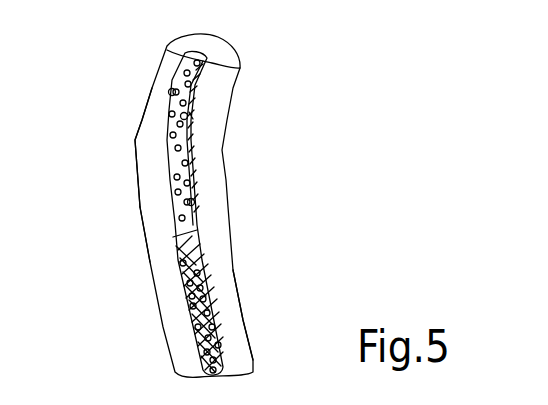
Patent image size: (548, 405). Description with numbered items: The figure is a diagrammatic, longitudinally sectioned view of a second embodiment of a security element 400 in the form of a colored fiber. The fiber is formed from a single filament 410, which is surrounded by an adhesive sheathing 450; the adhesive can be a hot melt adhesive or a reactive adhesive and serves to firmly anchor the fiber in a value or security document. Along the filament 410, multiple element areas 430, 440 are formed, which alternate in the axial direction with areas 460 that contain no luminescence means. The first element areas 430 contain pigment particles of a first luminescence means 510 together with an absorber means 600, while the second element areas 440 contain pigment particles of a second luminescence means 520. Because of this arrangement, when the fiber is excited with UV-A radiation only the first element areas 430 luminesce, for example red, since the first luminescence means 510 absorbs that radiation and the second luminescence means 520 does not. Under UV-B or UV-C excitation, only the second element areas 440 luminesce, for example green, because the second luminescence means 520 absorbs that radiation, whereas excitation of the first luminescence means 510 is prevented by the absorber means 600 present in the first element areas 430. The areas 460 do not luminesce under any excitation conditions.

The security element 400 is at (236, 181).
The filament 410 is at (170, 91).
The first element areas 430 is at (199, 104).
The second element areas 440 is at (165, 172).
The adhesive sheathing 450 is at (231, 54).
The areas containing no luminescence means 460 is at (170, 230).
The first luminescence means 510 is at (183, 116).
The second luminescence means 520 is at (193, 202).
The absorber means 600 is at (195, 116).